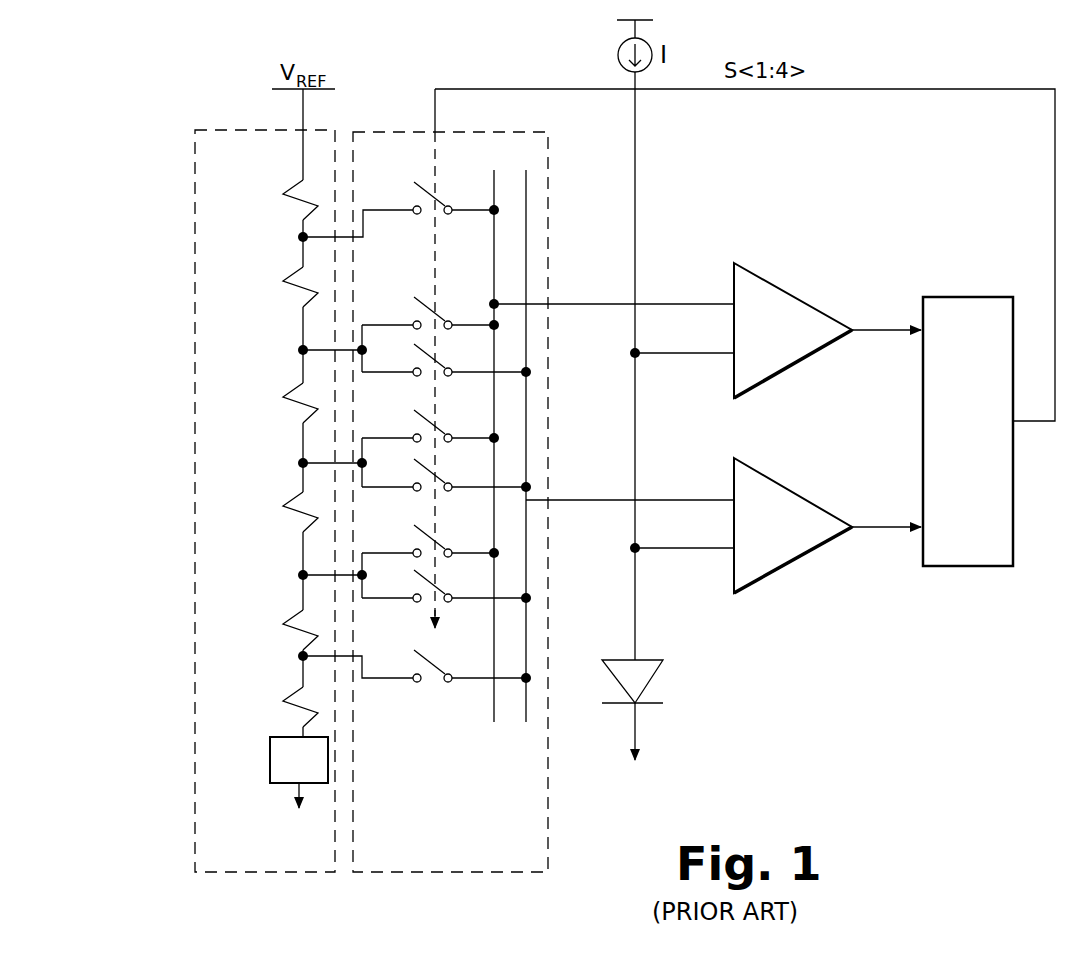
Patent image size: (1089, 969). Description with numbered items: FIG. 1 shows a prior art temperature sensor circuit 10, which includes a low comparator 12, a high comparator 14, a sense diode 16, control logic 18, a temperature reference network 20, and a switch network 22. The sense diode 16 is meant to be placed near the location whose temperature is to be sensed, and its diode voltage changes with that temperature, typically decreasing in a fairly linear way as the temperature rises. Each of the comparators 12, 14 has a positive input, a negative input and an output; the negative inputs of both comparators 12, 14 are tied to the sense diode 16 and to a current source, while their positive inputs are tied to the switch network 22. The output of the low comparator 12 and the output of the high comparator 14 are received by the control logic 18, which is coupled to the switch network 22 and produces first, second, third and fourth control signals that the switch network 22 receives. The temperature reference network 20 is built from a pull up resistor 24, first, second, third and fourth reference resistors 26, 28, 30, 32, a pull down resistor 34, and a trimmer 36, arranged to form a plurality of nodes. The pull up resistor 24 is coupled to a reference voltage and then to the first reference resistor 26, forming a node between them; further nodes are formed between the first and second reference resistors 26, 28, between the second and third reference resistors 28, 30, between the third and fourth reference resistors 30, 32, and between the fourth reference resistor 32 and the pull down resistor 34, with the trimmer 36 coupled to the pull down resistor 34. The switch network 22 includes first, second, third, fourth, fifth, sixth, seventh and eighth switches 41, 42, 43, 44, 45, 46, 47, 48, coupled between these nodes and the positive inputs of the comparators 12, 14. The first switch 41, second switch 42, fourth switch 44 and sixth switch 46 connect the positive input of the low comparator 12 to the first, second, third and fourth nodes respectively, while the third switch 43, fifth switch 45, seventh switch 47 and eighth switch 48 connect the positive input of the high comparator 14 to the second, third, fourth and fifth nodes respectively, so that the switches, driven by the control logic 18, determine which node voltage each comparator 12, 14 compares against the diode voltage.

The temperature sensor circuit 10 is at (176, 94).
The low comparator 12 is at (787, 292).
The high comparator 14 is at (787, 489).
The sense diode 16 is at (660, 674).
The control logic 18 is at (1013, 497).
The temperature reference network 20 is at (195, 200).
The switch network 22 is at (407, 130).
The pull up resistor 24 is at (296, 204).
The first reference resistor 26 is at (296, 292).
The second reference resistor 28 is at (296, 407).
The third reference resistor 30 is at (296, 519).
The fourth reference resistor 32 is at (296, 630).
The pull down resistor 34 is at (296, 707).
The trimmer 36 is at (270, 774).
The first switch 41 is at (412, 185).
The second switch 42 is at (412, 300).
The third switch 43 is at (412, 347).
The fourth switch 44 is at (412, 413).
The fifth switch 45 is at (412, 462).
The sixth switch 46 is at (412, 528).
The seventh switch 47 is at (412, 573).
The eighth switch 48 is at (412, 653).